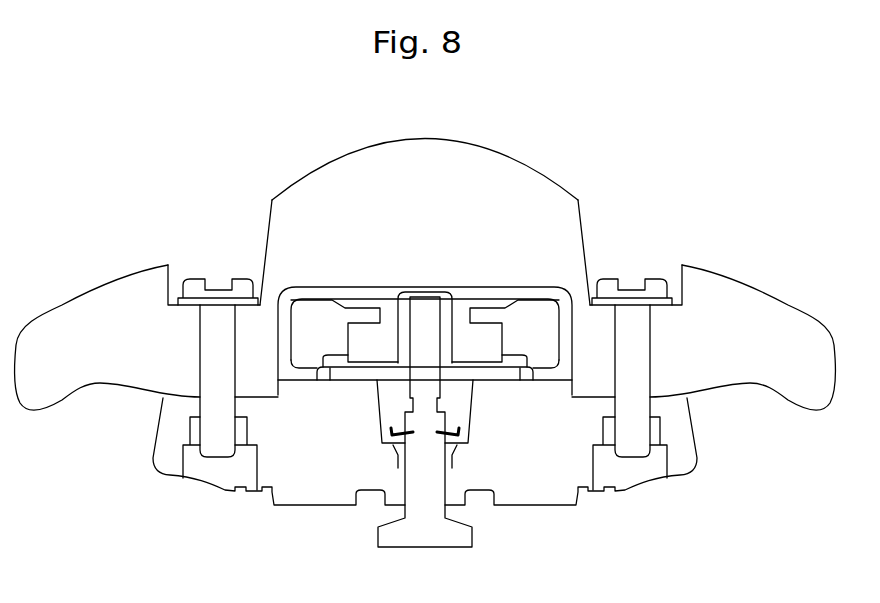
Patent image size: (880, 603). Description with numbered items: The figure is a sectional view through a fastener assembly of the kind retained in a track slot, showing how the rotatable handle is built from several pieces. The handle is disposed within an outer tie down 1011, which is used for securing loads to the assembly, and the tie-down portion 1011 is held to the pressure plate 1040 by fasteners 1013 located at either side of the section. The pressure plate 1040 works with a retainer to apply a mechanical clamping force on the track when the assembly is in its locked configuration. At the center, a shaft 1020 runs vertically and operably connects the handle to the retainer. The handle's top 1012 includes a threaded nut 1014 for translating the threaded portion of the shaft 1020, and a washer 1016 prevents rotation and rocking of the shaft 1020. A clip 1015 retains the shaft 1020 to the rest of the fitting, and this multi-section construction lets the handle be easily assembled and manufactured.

The outer tie down 1011 is at (360, 165).
The top 1012 is at (517, 310).
The fasteners 1013 is at (222, 448).
The threaded nut 1014 is at (393, 307).
The clip 1015 is at (397, 443).
The washer 1016 is at (500, 370).
The shaft 1020 is at (430, 305).
The pressure plate 1040 is at (680, 462).